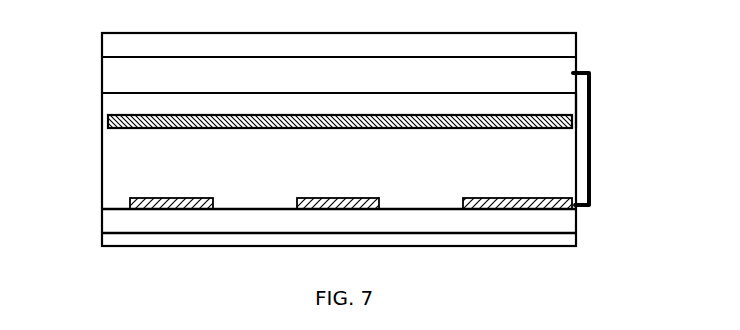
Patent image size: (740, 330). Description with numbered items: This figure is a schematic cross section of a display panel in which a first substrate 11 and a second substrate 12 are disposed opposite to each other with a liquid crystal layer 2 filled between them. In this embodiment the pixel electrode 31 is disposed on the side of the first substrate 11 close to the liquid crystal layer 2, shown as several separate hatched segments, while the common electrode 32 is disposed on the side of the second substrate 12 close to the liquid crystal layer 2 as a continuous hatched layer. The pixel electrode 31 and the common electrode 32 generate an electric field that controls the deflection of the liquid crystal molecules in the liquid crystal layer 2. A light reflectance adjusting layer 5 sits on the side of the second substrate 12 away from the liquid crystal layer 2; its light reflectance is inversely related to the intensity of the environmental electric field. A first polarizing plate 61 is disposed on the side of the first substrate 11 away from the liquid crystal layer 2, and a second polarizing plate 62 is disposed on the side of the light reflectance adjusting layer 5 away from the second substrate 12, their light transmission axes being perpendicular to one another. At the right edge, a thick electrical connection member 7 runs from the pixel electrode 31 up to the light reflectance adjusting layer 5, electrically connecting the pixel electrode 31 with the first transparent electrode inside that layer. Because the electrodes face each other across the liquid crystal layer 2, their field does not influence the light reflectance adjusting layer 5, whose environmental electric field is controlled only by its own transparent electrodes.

The liquid crystal layer 2 is at (552, 155).
The light reflectance adjusting layer 5 is at (102, 73).
The electrical connection member 7 is at (590, 70).
The first substrate 11 is at (577, 223).
The second substrate 12 is at (577, 100).
The pixel electrode 31 is at (130, 203).
The common electrode 32 is at (108, 118).
The first polarizing plate 61 is at (577, 240).
The second polarizing plate 62 is at (577, 43).